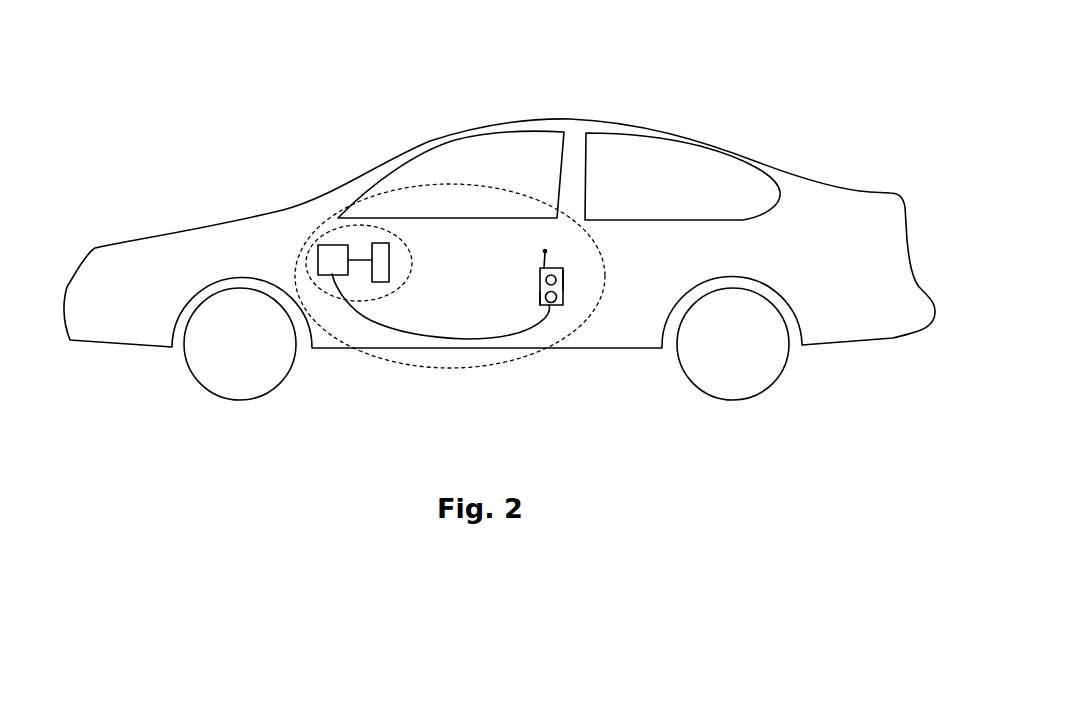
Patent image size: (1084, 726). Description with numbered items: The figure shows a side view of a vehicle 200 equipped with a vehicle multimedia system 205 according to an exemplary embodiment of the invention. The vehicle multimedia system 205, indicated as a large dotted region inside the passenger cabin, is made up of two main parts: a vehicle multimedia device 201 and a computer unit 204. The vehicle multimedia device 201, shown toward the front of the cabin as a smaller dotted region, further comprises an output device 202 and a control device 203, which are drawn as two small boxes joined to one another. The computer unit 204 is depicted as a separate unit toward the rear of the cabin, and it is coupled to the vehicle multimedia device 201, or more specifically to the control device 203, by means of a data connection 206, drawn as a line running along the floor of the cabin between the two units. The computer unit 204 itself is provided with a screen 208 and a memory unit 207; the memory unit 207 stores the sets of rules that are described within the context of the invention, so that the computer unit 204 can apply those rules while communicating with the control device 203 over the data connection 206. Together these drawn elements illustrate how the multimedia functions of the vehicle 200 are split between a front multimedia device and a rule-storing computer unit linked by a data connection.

The vehicle 200 is at (790, 80).
The vehicle multimedia device 201 is at (372, 298).
The output device 202 is at (384, 243).
The control device 203 is at (318, 262).
The computer unit 204 is at (563, 302).
The vehicle multimedia system 205 is at (487, 368).
The data connection 206 is at (513, 334).
The memory unit 207 is at (540, 300).
The screen 208 is at (563, 282).